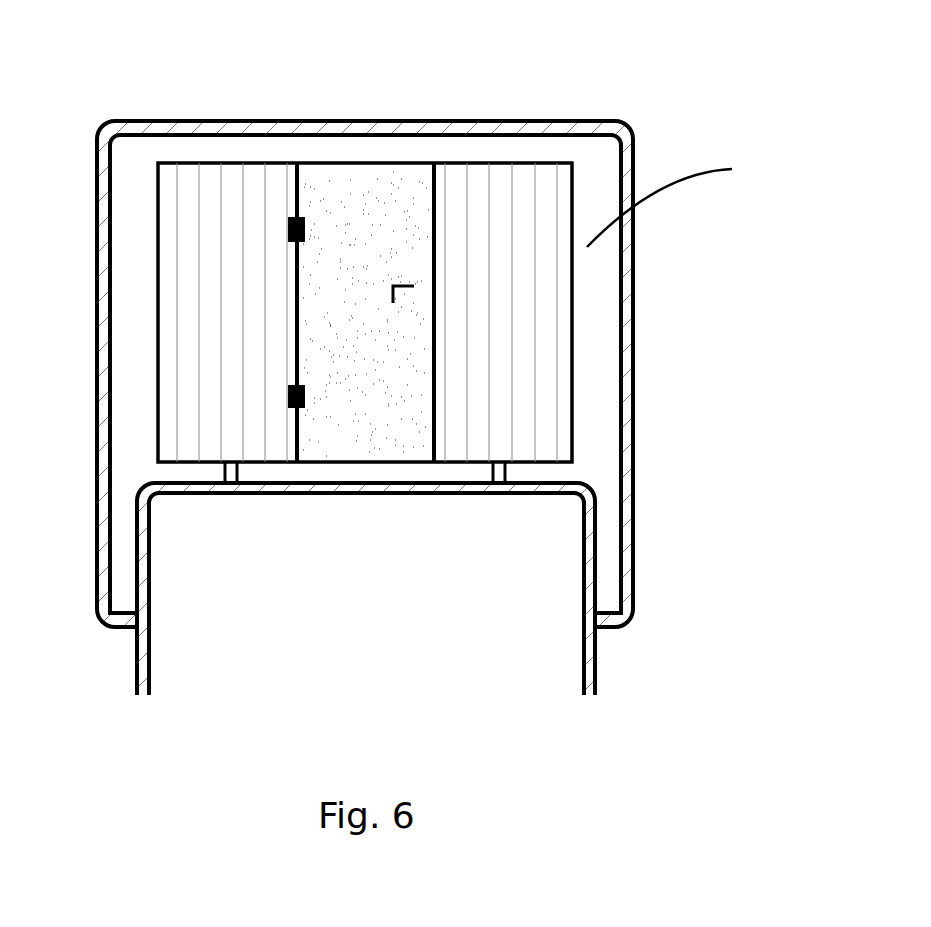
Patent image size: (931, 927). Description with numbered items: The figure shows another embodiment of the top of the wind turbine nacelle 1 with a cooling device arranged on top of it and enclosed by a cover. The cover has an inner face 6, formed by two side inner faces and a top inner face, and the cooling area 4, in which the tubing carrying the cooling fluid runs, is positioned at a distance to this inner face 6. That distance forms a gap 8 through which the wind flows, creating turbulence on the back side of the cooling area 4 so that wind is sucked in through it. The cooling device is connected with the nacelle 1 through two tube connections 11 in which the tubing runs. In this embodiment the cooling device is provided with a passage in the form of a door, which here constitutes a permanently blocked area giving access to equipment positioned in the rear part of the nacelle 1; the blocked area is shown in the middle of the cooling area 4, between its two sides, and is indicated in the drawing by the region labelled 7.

The wind turbine nacelle 1 is at (587, 600).
The cooling area 4 is at (520, 365).
The inner face 6 is at (622, 412).
The fill / core region 7 is at (373, 175).
The gap 8 is at (677, 196).
The tube connections 11 is at (232, 475).